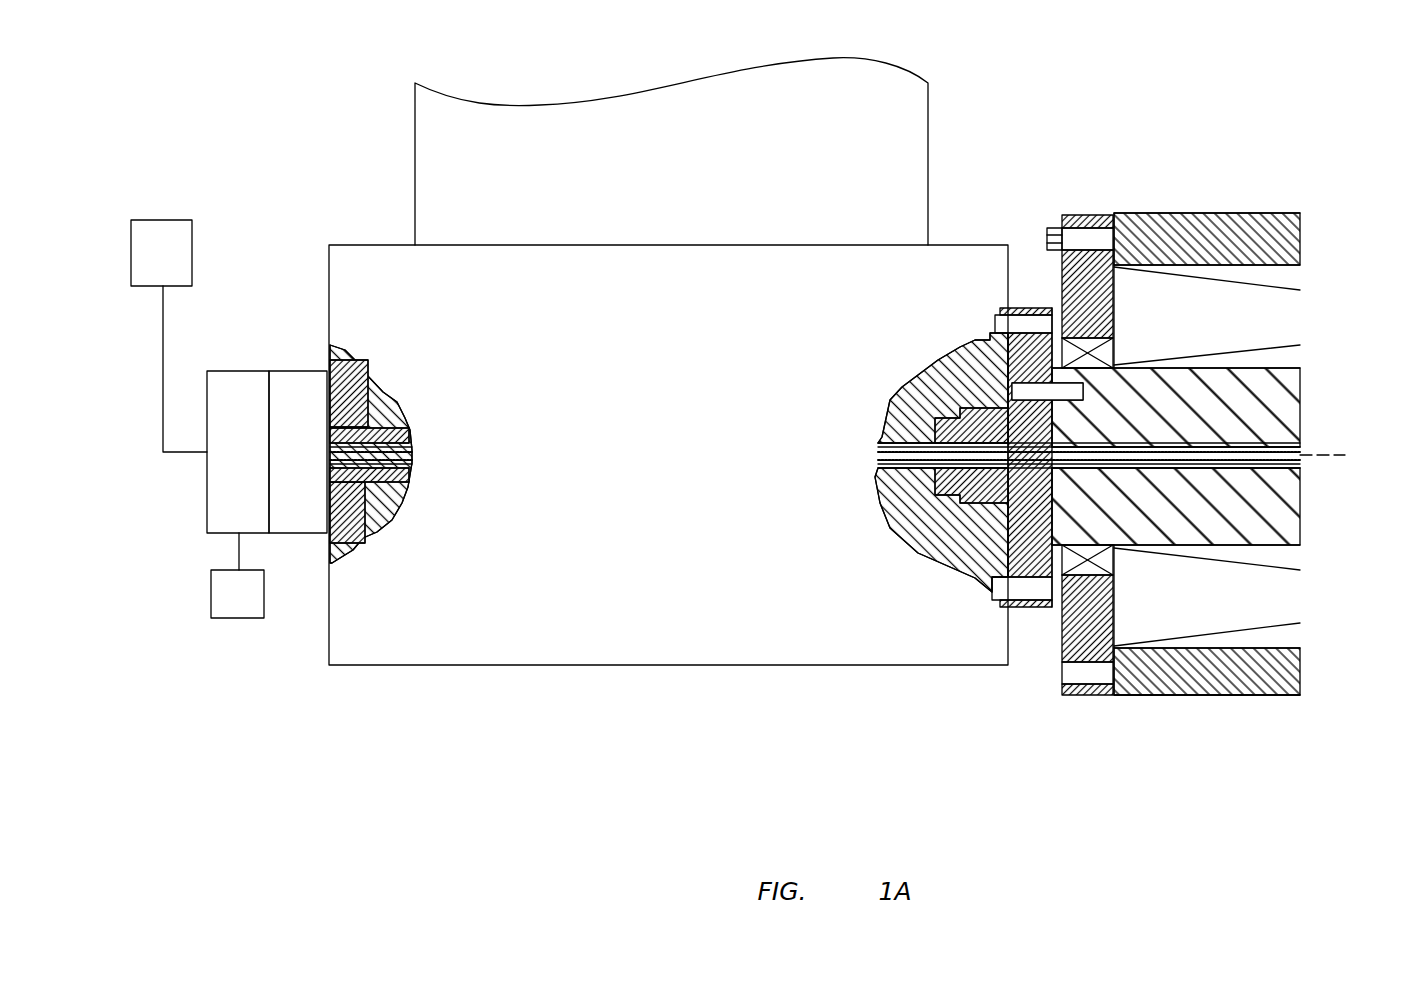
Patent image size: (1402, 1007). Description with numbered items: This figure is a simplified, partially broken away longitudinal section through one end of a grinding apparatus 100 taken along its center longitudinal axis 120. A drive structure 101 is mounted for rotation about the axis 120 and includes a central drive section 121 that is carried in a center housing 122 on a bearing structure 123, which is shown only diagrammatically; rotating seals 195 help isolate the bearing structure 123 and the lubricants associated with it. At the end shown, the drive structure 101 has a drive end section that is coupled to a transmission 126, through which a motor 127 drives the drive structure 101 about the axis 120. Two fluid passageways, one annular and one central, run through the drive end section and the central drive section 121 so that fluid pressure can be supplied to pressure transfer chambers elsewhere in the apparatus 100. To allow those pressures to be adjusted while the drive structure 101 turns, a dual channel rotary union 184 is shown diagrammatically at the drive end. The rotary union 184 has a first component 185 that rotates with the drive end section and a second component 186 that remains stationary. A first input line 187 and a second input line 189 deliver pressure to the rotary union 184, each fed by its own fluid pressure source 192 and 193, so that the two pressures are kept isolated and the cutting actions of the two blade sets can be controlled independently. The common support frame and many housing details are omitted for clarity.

The apparatus 100 is at (1210, 70).
The drive structure 101 is at (1217, 556).
The center longitudinal axis 120 is at (1303, 459).
The central drive section 121 is at (1257, 550).
The center housing 122 is at (1187, 693).
The bearing structure 123 is at (1200, 270).
The transmission 126 is at (505, 628).
The motor 127 is at (652, 197).
The rotary union 184 is at (219, 447).
The first component 185 is at (279, 466).
The second component 186 is at (218, 466).
The first input line 187 is at (234, 553).
The second input line 189 is at (165, 336).
The fluid pressure source 192 is at (218, 609).
The fluid pressure source 193 is at (142, 268).
The rotating seals 195 is at (1098, 338).